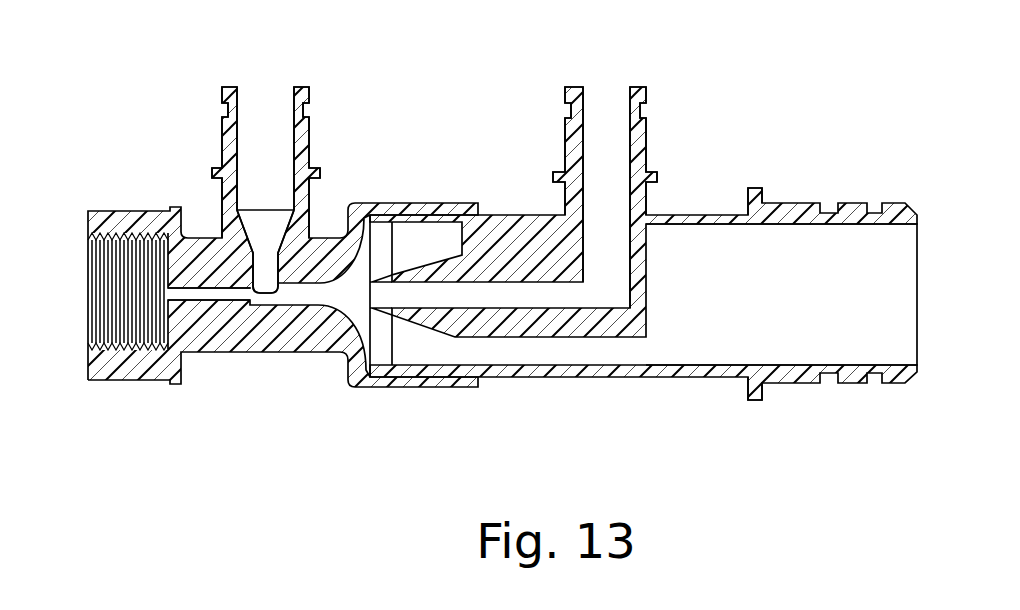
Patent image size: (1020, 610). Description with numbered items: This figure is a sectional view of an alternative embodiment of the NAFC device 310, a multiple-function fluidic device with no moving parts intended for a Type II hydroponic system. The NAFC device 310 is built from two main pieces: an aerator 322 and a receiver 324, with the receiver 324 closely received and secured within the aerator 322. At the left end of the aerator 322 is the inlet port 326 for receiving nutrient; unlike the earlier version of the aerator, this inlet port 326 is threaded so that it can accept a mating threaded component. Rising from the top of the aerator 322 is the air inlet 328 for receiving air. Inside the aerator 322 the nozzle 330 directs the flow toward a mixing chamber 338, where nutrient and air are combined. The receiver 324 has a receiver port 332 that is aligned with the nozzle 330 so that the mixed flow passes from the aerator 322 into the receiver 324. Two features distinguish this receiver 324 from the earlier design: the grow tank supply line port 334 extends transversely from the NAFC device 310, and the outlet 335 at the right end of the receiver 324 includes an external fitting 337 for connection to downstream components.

The NAFC device 310 is at (481, 304).
The aerator 322 is at (262, 268).
The receiver 324 is at (640, 214).
The inlet port 326 is at (112, 292).
The air inlet 328 is at (267, 117).
The nozzle 330 is at (238, 297).
The receiver port 332 is at (402, 290).
The grow tank supply line port 334 is at (603, 140).
The outlet 335 is at (818, 298).
The external fitting 337 is at (789, 264).
The mixing chamber 338 is at (277, 307).